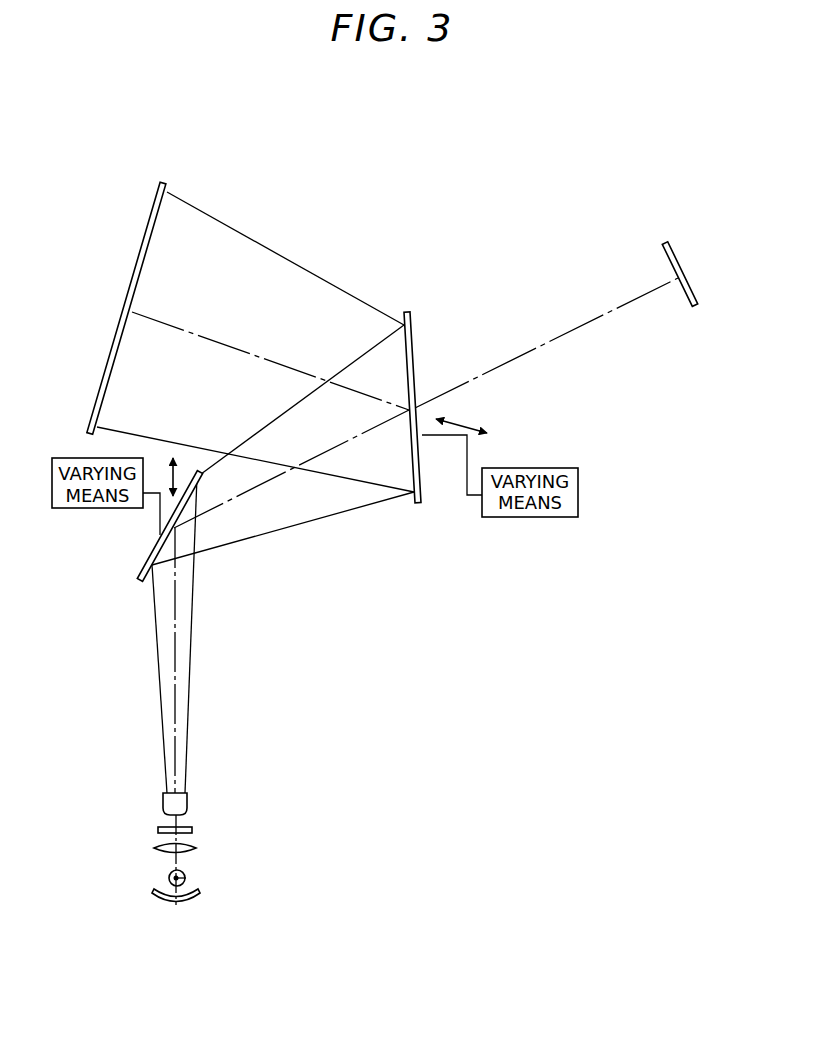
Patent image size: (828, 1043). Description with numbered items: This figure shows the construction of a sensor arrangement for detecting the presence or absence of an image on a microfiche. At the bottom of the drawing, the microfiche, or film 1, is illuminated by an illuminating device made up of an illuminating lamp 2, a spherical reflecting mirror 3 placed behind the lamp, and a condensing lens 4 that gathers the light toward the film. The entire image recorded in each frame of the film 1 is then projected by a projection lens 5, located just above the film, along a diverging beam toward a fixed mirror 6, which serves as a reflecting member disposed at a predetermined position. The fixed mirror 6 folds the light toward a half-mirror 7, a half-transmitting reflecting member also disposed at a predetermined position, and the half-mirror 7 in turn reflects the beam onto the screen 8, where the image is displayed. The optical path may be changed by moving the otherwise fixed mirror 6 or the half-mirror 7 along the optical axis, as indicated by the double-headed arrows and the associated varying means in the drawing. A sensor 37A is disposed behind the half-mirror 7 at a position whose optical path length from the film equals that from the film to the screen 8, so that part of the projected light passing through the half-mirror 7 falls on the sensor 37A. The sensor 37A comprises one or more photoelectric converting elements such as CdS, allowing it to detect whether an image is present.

The screen 8 is at (143, 244).
The half-mirror 7 is at (423, 445).
The fixed mirror 6 is at (153, 548).
The sensor 37A is at (681, 263).
The projection lens 5 is at (189, 802).
The microfiche (film) 1 is at (193, 829).
The condensing lens 4 is at (196, 851).
The illuminating lamp 2 is at (186, 876).
The spherical reflecting mirror 3 is at (200, 902).